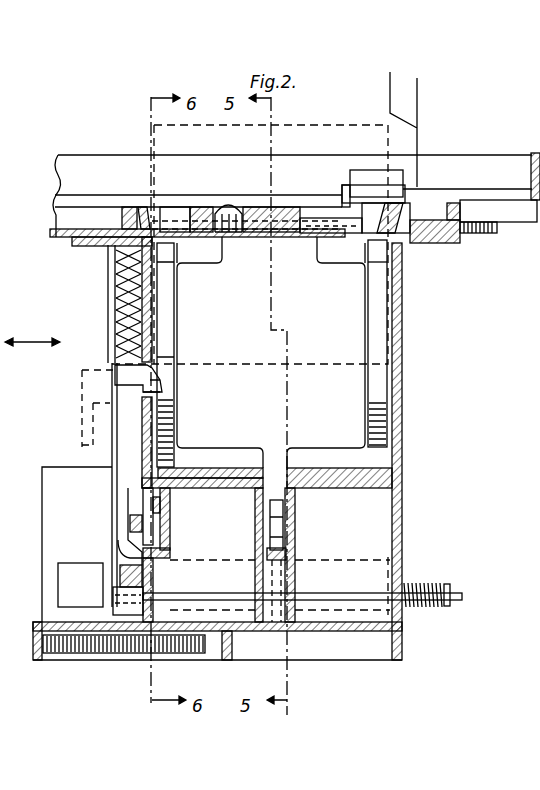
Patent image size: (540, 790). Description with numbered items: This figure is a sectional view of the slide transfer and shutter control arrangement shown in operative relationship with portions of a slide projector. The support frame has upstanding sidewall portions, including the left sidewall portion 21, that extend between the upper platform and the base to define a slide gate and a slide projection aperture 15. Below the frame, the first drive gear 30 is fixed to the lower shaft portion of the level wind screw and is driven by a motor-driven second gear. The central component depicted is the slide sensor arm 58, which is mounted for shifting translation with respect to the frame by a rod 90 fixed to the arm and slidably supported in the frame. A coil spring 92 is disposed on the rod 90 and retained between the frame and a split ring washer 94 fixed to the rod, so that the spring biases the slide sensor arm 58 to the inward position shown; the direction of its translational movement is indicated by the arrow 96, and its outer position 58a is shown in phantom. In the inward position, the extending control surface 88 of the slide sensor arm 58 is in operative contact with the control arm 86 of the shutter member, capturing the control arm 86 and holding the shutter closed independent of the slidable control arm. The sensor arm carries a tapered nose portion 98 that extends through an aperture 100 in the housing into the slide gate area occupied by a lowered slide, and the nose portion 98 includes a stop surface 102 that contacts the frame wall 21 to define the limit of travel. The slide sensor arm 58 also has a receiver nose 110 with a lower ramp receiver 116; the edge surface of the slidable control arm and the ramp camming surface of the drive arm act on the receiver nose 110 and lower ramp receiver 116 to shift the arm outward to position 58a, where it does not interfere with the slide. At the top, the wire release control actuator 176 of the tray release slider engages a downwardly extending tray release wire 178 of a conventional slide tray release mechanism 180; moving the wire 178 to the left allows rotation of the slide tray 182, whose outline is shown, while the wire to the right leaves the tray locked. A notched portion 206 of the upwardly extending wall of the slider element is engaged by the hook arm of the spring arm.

The slide projection aperture 15 is at (352, 343).
The left sidewall portion 21 is at (114, 298).
The first drive gear 30 is at (102, 647).
The slide sensor arm 58 is at (117, 449).
The outer position of the slide sensor arm 58a is at (82, 395).
The control arm 86 is at (133, 522).
The extending control surface 88 is at (133, 510).
The rod 90 is at (377, 588).
The coil spring 92 is at (413, 587).
The split ring washer 94 is at (447, 604).
The arrow 96 is at (30, 330).
The nose portion 98 is at (147, 383).
The aperture 100 is at (147, 363).
The stop surface 102 is at (140, 402).
The receiver nose 110 is at (140, 547).
The lower ramp receiver 116 is at (133, 560).
The wire release control actuator 176 is at (380, 220).
The tray release wire 178 is at (342, 193).
The slide tray release mechanism 180 is at (377, 168).
The slide tray 182 is at (391, 78).
The notched portion 206 is at (253, 230).